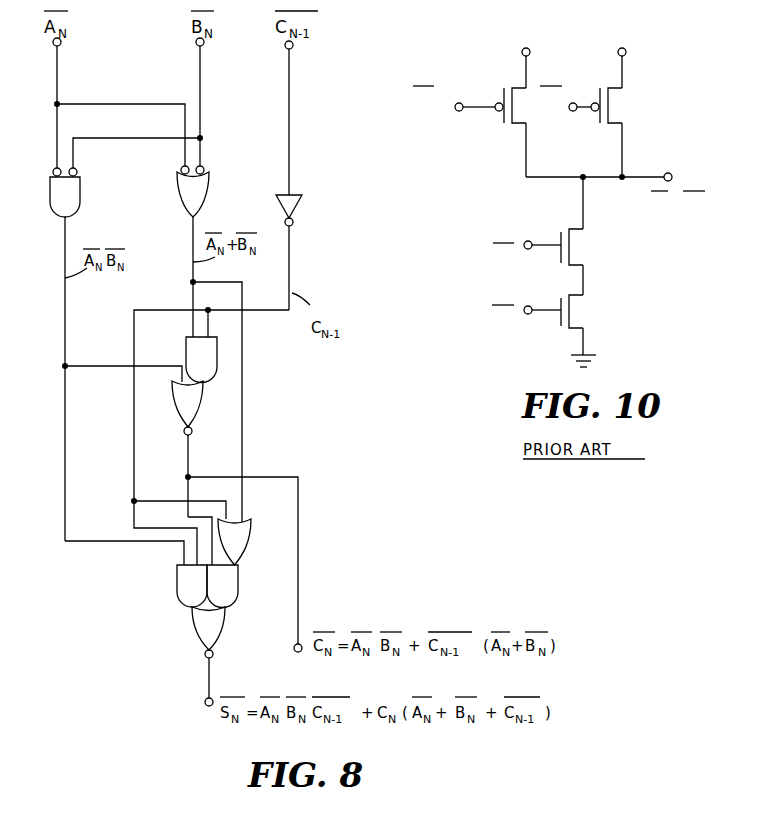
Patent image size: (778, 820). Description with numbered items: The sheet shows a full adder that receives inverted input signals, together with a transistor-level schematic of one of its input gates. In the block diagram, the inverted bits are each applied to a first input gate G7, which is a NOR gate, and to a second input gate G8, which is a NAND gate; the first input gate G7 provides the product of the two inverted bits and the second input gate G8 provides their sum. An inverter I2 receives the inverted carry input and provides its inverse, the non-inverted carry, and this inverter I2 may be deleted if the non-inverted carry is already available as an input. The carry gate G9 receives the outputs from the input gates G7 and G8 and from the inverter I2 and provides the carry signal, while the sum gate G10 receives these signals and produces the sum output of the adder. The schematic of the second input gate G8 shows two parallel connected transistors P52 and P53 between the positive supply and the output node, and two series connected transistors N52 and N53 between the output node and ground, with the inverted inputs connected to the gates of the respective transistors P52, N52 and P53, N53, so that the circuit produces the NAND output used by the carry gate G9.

In FIG. 8, the first input gate G7 is at (40, 176).
In FIG. 8, the second input gate G8 is at (213, 170).
In FIG. 10, the second input gate G8 is at (559, 198).
In FIG. 8, the carry gate G9 is at (175, 357).
In FIG. 8, the sum gate G10 is at (180, 622).
In FIG. 8, the inverter I2 is at (303, 205).
In FIG. 10, the transistor P52 is at (490, 121).
In FIG. 10, the transistor P53 is at (608, 106).
In FIG. 10, the transistor N52 is at (567, 248).
In FIG. 10, the transistor N53 is at (567, 313).